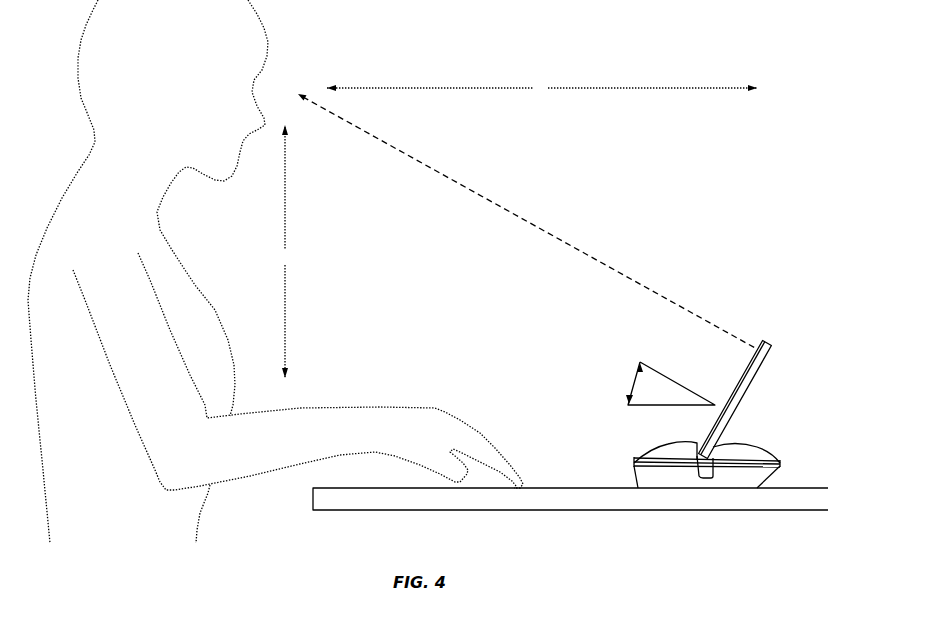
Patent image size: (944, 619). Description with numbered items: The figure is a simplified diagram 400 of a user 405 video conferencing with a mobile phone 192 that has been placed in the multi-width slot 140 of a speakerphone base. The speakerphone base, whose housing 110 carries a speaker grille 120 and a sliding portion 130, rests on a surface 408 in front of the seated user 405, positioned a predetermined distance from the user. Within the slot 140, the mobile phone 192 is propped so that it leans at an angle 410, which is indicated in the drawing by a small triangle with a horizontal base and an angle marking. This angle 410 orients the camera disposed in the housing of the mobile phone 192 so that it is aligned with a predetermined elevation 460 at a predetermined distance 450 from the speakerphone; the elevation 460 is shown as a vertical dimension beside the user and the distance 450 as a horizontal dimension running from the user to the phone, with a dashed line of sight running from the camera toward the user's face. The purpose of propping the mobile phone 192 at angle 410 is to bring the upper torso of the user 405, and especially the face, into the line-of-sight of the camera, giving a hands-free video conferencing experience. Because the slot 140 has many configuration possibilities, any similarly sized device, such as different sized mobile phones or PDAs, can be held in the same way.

The user 405 is at (268, 42).
The predetermined distance 450 is at (545, 78).
The predetermined elevation 460 is at (292, 258).
The simplified diagram 400 is at (794, 143).
The mobile phone 192 is at (775, 345).
The angle 410 is at (626, 383).
The speaker grille 120 is at (652, 452).
The sliding portion 130 is at (757, 448).
The housing 110 is at (755, 483).
The multi-width slot 140 is at (703, 477).
The surface 408 is at (571, 500).